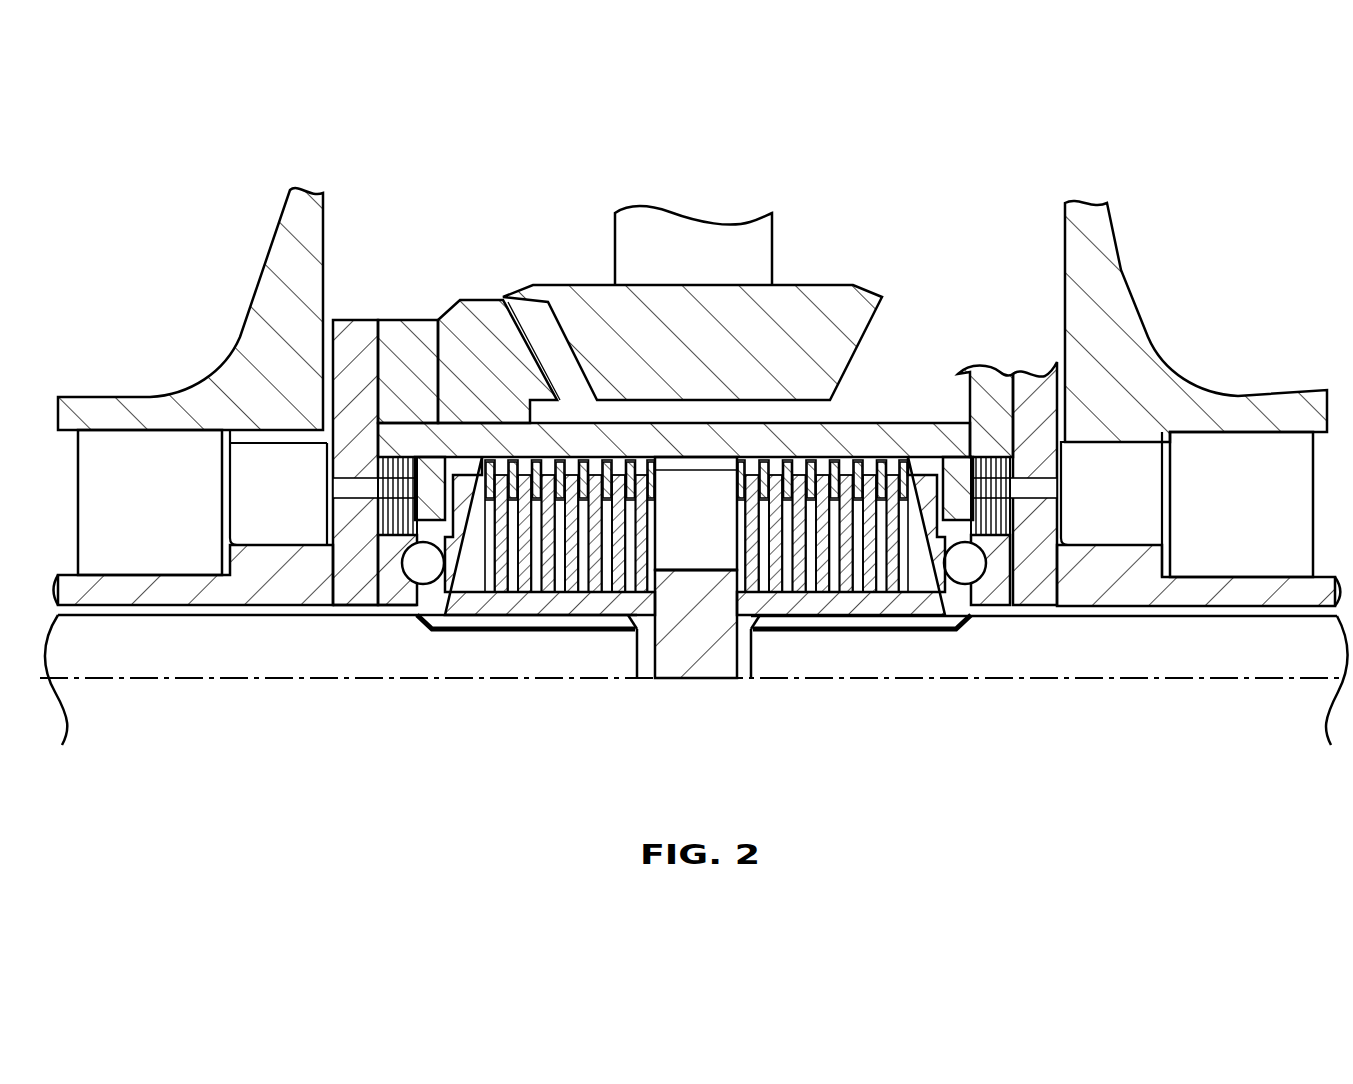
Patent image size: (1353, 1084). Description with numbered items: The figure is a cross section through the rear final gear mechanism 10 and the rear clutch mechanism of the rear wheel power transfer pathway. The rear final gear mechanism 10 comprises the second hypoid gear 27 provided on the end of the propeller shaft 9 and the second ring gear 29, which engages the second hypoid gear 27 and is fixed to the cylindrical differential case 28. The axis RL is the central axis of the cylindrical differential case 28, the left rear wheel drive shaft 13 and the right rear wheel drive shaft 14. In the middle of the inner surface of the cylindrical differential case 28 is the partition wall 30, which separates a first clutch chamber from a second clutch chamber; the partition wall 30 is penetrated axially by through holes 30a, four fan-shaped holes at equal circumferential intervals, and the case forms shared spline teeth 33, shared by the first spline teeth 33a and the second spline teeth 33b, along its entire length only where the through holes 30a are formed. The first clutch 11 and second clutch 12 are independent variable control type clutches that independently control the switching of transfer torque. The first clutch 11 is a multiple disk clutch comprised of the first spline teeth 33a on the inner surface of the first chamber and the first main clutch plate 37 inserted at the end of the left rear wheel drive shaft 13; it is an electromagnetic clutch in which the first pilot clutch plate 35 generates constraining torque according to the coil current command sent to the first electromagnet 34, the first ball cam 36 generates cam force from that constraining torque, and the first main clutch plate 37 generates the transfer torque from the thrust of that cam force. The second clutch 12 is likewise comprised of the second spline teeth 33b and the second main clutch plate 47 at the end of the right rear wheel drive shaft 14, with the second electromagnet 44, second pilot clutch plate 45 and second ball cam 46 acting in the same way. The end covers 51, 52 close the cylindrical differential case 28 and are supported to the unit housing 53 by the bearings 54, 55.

The propeller shaft 9 is at (753, 240).
The rear final gear mechanism 10 is at (660, 291).
The first clutch 11 is at (425, 600).
The second clutch 12 is at (965, 600).
The left rear wheel drive shaft 13 is at (155, 648).
The right rear wheel drive shaft 14 is at (1213, 655).
The second hypoid gear 27 is at (692, 306).
The cylindrical differential case 28 is at (855, 418).
The second ring gear 29 is at (477, 300).
The partition wall 30 is at (697, 650).
The through holes 30a is at (683, 553).
The shared spline teeth 33 is at (693, 476).
The first spline teeth 33a is at (458, 462).
The second spline teeth 33b is at (923, 463).
The first electromagnet 34 is at (287, 507).
The first pilot clutch plate 35 is at (375, 530).
The first ball cam 36 is at (432, 567).
The first main clutch plate 37 is at (558, 535).
The second electromagnet 44 is at (1110, 517).
The second pilot clutch plate 45 is at (997, 513).
The second ball cam 46 is at (962, 570).
The second main clutch plate 47 is at (806, 535).
The end cover 51 is at (357, 350).
The end cover 52 is at (1038, 387).
The unit housing 53 is at (292, 258).
The bearing 54 is at (127, 452).
The bearing 55 is at (1245, 462).
The axis RL is at (1255, 685).